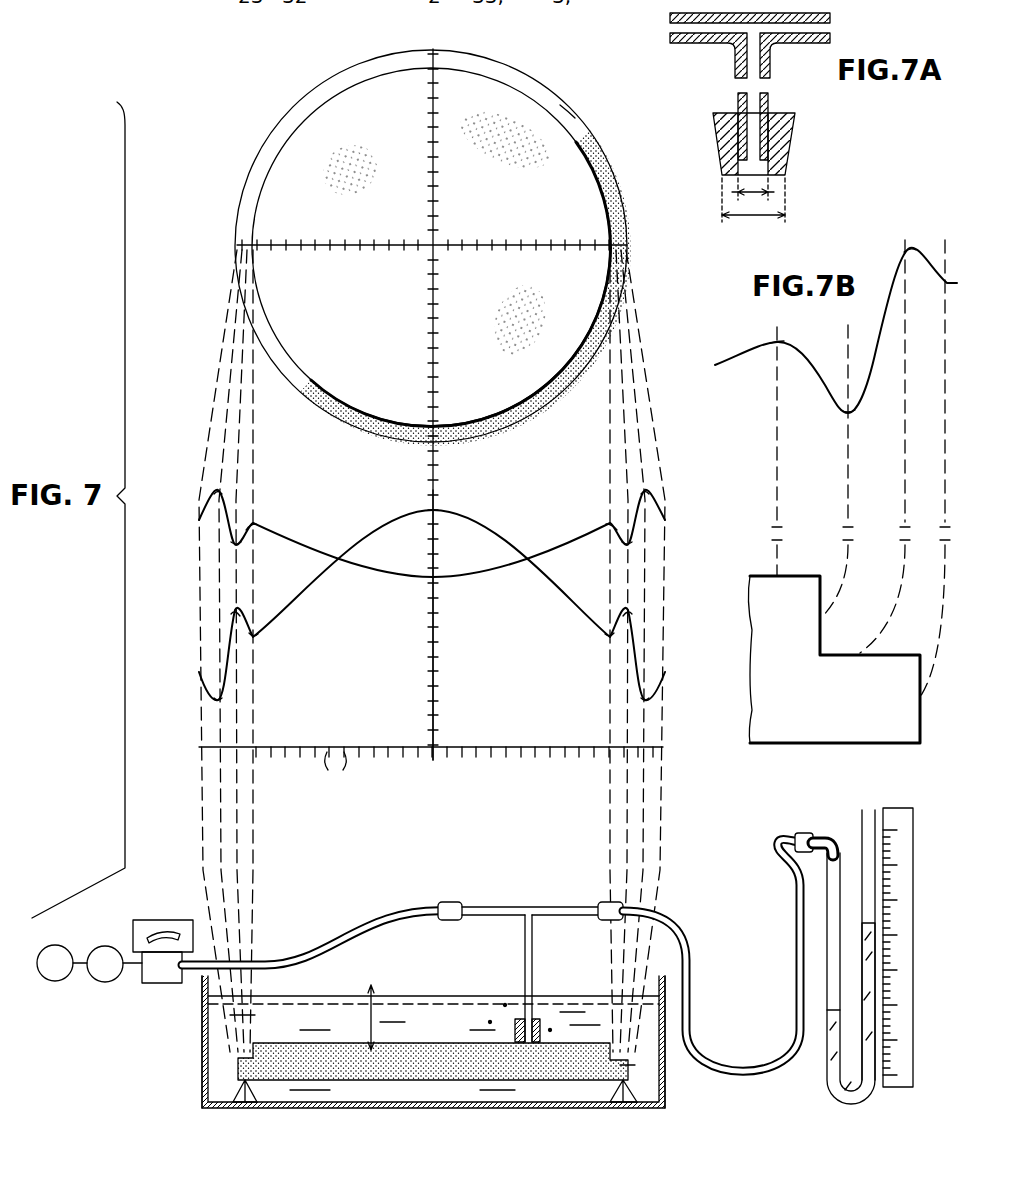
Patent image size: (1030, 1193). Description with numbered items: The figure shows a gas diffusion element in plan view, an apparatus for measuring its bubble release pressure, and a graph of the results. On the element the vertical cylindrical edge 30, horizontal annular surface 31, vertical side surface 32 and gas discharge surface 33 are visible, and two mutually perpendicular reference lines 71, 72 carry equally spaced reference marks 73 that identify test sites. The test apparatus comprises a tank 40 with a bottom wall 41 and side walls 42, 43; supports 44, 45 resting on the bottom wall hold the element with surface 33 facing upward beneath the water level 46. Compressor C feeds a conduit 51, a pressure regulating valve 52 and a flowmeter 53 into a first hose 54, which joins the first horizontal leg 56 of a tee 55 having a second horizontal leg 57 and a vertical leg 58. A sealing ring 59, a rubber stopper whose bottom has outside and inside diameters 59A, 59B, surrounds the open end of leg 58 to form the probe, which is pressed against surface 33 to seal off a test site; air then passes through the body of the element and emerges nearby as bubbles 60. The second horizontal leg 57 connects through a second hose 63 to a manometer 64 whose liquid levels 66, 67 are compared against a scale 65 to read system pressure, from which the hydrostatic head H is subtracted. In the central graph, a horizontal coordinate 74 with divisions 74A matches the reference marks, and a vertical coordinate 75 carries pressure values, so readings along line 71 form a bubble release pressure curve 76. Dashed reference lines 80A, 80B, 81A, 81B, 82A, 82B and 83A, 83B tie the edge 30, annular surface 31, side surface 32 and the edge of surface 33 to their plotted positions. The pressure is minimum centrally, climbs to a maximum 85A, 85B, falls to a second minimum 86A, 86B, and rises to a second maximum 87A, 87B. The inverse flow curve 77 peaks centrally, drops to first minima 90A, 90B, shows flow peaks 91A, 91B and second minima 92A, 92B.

In FIG. 7, the vertical cylindrical edge 30 is at (596, 128).
In FIG. 7B, the vertical cylindrical edge 30 is at (918, 702).
In FIG. 7, the horizontal annular surface 31 is at (562, 107).
In FIG. 7B, the horizontal annular surface 31 is at (882, 655).
In FIG. 7, the vertical side surface 32 is at (512, 80).
In FIG. 7B, the vertical side surface 32 is at (822, 636).
In FIG. 7, the gas discharge surface 33 is at (570, 217).
In FIG. 7B, the gas discharge surface 33 is at (768, 576).
In FIG. 7, the tank 40 is at (432, 1122).
In FIG. 7, the bottom wall 41 is at (498, 1103).
In FIG. 7, the side wall 42 is at (668, 1085).
In FIG. 7, the side wall 43 is at (200, 1082).
In FIG. 7, the support 44 is at (626, 1106).
In FIG. 7, the support 45 is at (250, 1108).
In FIG. 7, the water level 46 is at (470, 996).
In FIG. 7, the conduit 51 is at (80, 946).
In FIG. 7, the pressure regulating valve 52 is at (118, 947).
In FIG. 7, the flowmeter 53 is at (186, 920).
In FIG. 7, the first hose 54 is at (340, 944).
In FIG. 7, the tee 55 is at (528, 902).
In FIG. 7A, the tee 55 is at (722, 57).
In FIG. 7, the first horizontal leg 56 is at (496, 900).
In FIG. 7, the second horizontal leg 57 is at (580, 902).
In FIG. 7, the vertical leg 58 is at (534, 964).
In FIG. 7A, the vertical leg 58 is at (772, 98).
In FIG. 7, the sealing ring 59 is at (544, 1024).
In FIG. 7A, the sealing ring 59 is at (795, 140).
In FIG. 7A, the outside diameter 59A is at (766, 225).
In FIG. 7A, the inside diameter 59B is at (766, 198).
In FIG. 7, the bubbles 60 is at (498, 1000).
In FIG. 7, the second hose 63 is at (688, 952).
In FIG. 7, the manometer 64 is at (818, 832).
In FIG. 7, the scale 65 is at (906, 808).
In FIG. 7, the liquid level 66 is at (828, 1012).
In FIG. 7, the liquid level 67 is at (860, 870).
In FIG. 7, the reference line 71 is at (277, 244).
In FIG. 7, the reference line 72 is at (430, 103).
In FIG. 7, the reference marks 73 is at (428, 188).
In FIG. 7, the horizontal coordinate 74 is at (333, 746).
In FIG. 7, the divisions 74A is at (342, 771).
In FIG. 7, the vertical coordinate 75 is at (428, 685).
In FIG. 7, the bubble release pressure curve 76 is at (470, 574).
In FIG. 7B, the bubble release pressure curve 76 is at (930, 272).
In FIG. 7, the flow curve 77 is at (522, 532).
In FIG. 7, the dashed reference line 80A is at (232, 298).
In FIG. 7, the dashed reference line 81A is at (236, 330).
In FIG. 7, the dashed reference line 82A is at (240, 430).
In FIG. 7, the dashed reference line 83A is at (254, 470).
In FIG. 7, the dashed reference line 80B is at (634, 298).
In FIG. 7B, the dashed reference line 80B is at (944, 470).
In FIG. 7, the dashed reference line 81B is at (634, 330).
In FIG. 7B, the dashed reference line 81B is at (904, 470).
In FIG. 7, the dashed reference line 82B is at (618, 414).
In FIG. 7B, the dashed reference line 82B is at (848, 472).
In FIG. 7, the dashed reference line 83B is at (610, 452).
In FIG. 7B, the dashed reference line 83B is at (778, 478).
In FIG. 7, the bubble release pressure maximum 85A is at (254, 523).
In FIG. 7, the second minimum 86A is at (235, 546).
In FIG. 7, the second maximum 87A is at (216, 490).
In FIG. 7, the bubble release pressure maximum 85B is at (609, 523).
In FIG. 7B, the bubble release pressure maximum 85B is at (778, 342).
In FIG. 7, the second minimum 86B is at (629, 546).
In FIG. 7B, the second minimum 86B is at (847, 414).
In FIG. 7, the second maximum 87B is at (647, 490).
In FIG. 7B, the second maximum 87B is at (908, 250).
In FIG. 7, the first flow minimum 90A is at (254, 637).
In FIG. 7, the flow peak 91A is at (234, 610).
In FIG. 7, the second flow minimum 92A is at (220, 702).
In FIG. 7, the first flow minimum 90B is at (609, 637).
In FIG. 7, the flow peak 91B is at (630, 610).
In FIG. 7, the second flow minimum 92B is at (644, 702).